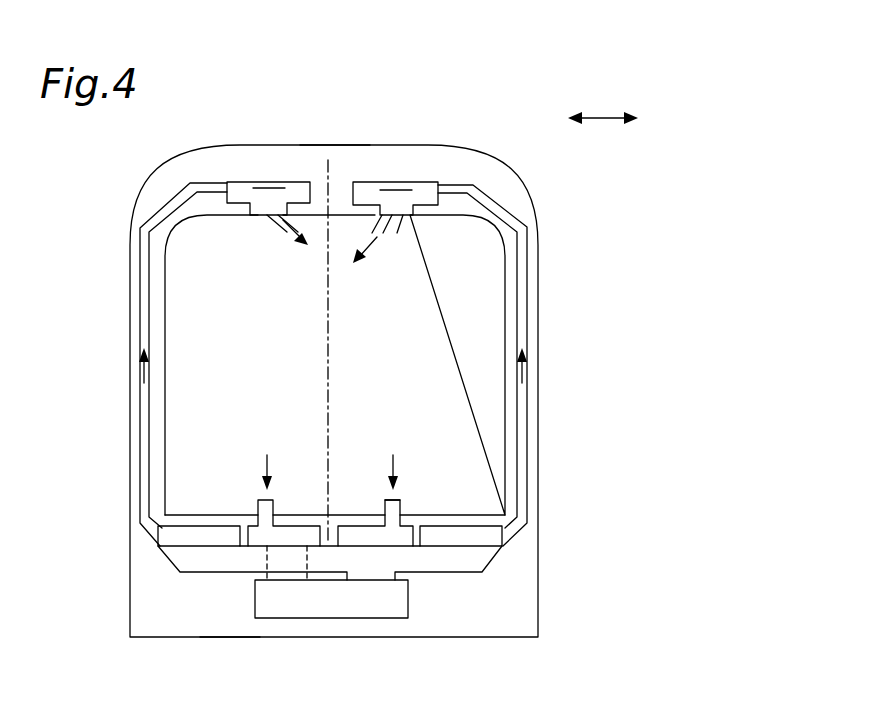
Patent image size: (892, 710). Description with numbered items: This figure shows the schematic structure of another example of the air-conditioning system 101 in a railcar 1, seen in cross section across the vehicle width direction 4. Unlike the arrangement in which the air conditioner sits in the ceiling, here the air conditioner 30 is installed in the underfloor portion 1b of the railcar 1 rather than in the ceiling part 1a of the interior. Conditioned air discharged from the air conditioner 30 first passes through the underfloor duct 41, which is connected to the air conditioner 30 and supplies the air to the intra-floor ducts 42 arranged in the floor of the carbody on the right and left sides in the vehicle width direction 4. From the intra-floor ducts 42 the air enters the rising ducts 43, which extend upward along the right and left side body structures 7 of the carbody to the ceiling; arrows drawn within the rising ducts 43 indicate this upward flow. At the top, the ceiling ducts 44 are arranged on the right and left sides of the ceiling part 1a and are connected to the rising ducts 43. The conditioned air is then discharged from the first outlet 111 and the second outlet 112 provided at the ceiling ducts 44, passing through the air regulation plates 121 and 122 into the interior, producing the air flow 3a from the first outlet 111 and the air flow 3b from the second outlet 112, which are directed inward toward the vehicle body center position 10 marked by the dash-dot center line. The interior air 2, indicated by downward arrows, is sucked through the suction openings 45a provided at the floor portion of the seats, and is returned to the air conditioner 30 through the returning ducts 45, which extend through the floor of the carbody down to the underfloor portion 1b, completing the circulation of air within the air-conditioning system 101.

The railcar 1 is at (539, 263).
The ceiling part 1a is at (323, 165).
The underfloor portion 1b is at (232, 600).
The interior air 2 is at (267, 463).
The air flow 3a is at (293, 237).
The air flow 3b is at (372, 248).
The vehicle width direction 4 is at (603, 118).
The side body structure 7 is at (153, 413).
The vehicle body center position 10 is at (330, 380).
The air conditioner 30 is at (410, 600).
The underfloor duct 41 is at (190, 567).
The intra-floor duct 42 is at (163, 540).
The rising duct 43 is at (138, 302).
The ceiling duct 44 is at (249, 187).
The returning duct 45 is at (382, 538).
The suction opening 45a is at (398, 498).
The air-conditioning system 101 is at (673, 197).
The first outlet 111 is at (272, 213).
The second outlet 112 is at (389, 216).
The air regulation plate 121 is at (262, 217).
The air regulation plate 122 is at (407, 227).